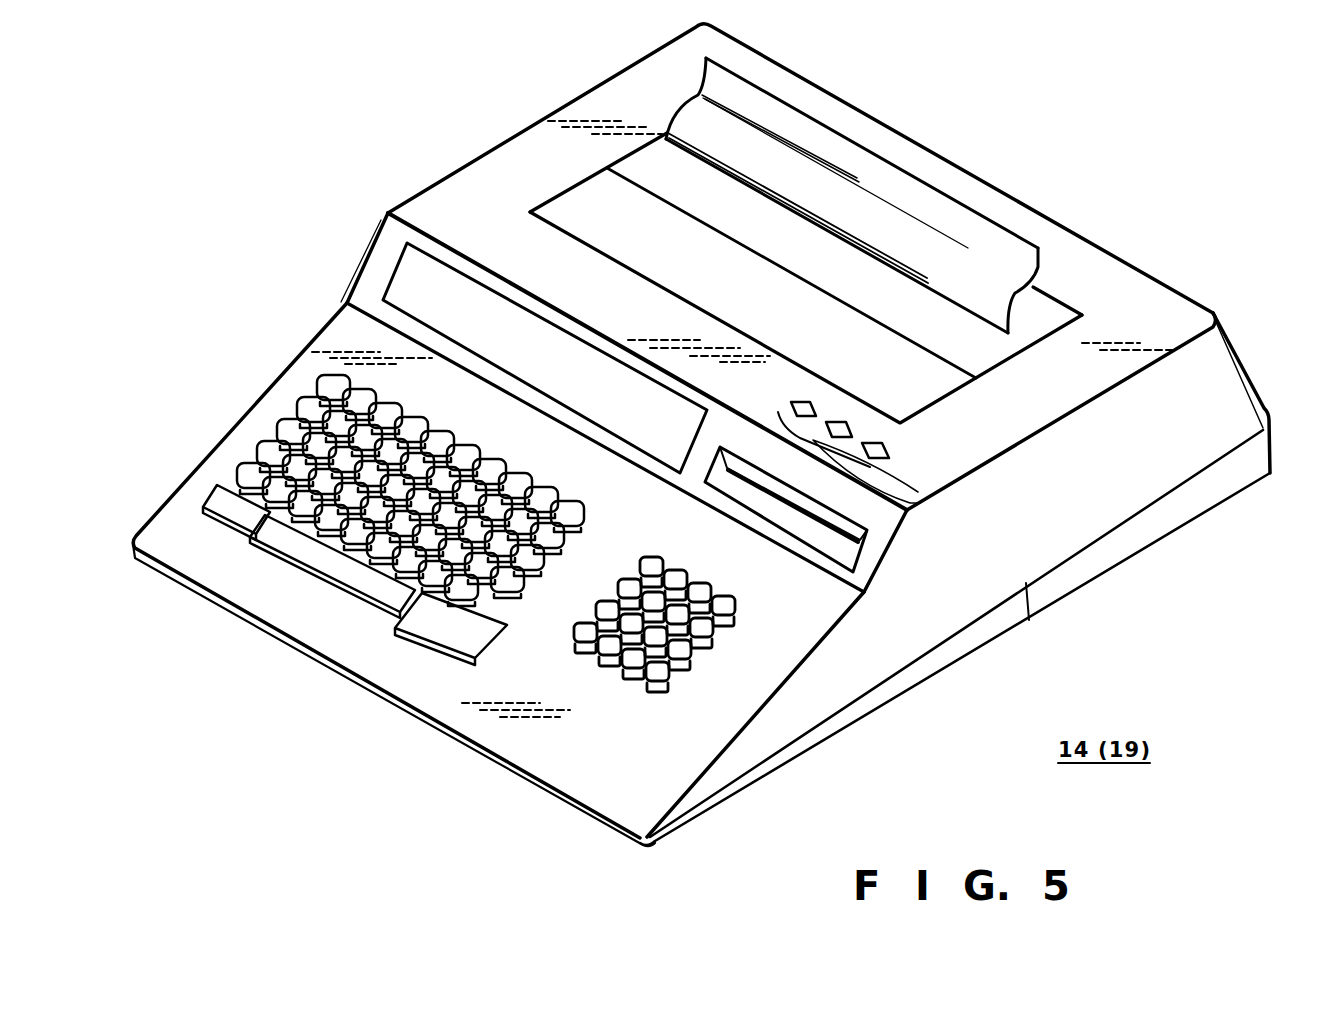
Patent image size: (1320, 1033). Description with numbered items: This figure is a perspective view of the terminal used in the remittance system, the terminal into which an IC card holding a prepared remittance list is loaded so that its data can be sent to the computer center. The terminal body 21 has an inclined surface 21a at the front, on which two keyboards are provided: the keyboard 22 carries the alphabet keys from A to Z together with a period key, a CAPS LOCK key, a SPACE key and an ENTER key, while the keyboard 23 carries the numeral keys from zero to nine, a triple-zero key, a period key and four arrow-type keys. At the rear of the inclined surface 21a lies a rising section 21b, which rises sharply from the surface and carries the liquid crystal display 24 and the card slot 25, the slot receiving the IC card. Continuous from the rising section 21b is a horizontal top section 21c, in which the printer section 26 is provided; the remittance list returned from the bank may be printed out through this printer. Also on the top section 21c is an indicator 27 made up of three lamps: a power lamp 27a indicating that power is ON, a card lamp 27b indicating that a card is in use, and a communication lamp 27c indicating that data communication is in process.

The terminal body 21 is at (472, 170).
The inclined surface 21a is at (737, 717).
The rising section 21b is at (870, 545).
The horizontal top section 21c is at (1173, 306).
The keyboard 22 is at (415, 640).
The keyboard 23 is at (627, 687).
The liquid crystal display 24 is at (405, 277).
The card slot 25 is at (805, 530).
The printer section 26 is at (1048, 313).
The indicator 27 is at (920, 503).
The power lamp 27a is at (790, 407).
The card lamp 27b is at (847, 425).
The communication lamp 27c is at (886, 452).